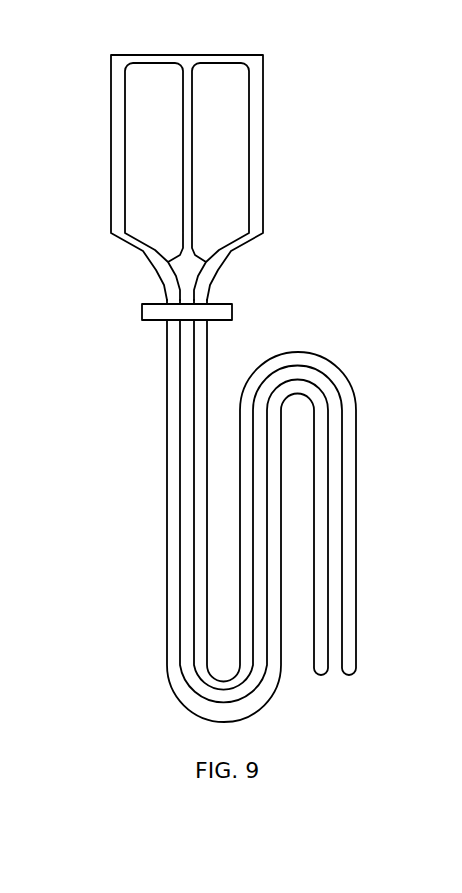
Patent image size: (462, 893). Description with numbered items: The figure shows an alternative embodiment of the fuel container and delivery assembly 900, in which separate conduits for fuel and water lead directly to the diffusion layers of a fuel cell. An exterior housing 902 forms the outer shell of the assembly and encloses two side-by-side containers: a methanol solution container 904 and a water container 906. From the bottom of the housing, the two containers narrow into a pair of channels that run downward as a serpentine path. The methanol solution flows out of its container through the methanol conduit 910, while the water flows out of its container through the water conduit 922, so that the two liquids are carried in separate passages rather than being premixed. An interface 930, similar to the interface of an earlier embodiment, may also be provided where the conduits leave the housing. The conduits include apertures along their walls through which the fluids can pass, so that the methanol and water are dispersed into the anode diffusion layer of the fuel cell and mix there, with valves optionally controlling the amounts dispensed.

The fuel container and delivery assembly 900 is at (398, 72).
The exterior housing 902 is at (238, 257).
The methanol solution container 904 is at (133, 155).
The water container 906 is at (240, 138).
The methanol conduit 910 is at (190, 284).
The water conduit 922 is at (185, 284).
The interface 930 is at (142, 312).